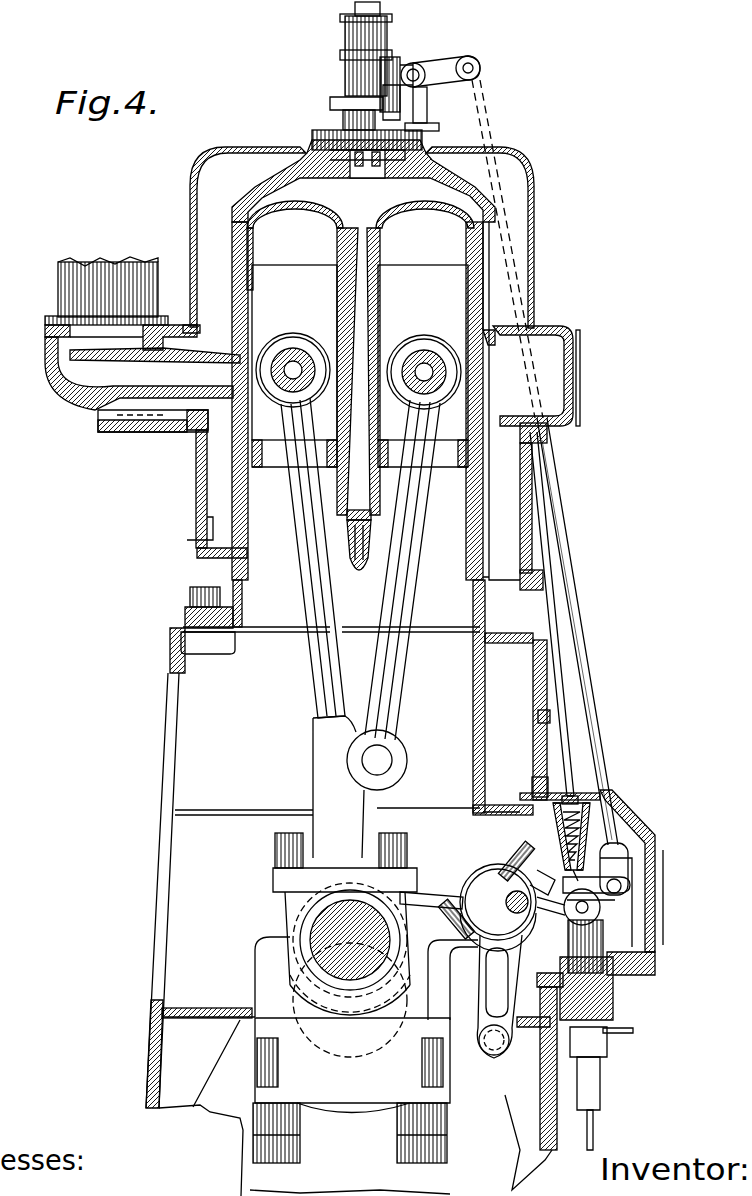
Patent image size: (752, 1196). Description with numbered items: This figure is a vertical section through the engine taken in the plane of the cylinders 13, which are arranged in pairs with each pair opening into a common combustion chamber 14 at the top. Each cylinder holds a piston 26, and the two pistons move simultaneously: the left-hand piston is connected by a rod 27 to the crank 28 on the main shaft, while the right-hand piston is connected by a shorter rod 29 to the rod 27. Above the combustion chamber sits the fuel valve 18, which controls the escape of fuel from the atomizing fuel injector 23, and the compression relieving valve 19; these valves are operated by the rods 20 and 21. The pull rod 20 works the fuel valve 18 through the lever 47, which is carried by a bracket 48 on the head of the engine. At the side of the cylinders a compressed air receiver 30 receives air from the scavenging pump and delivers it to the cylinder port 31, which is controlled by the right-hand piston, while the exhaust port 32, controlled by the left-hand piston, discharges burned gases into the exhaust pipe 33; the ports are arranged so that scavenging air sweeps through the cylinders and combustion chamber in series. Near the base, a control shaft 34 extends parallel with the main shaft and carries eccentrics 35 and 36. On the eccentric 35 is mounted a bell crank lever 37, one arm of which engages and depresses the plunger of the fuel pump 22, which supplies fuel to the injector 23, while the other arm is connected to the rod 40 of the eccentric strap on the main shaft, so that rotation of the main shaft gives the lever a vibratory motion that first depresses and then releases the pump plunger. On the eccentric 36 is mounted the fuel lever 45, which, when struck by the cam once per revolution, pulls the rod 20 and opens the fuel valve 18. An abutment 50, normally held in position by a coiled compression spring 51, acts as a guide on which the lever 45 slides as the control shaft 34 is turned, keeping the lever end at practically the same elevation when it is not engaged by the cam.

The cylinders 13 is at (241, 505).
The combustion chamber 14 is at (358, 236).
The fuel valve 18 is at (345, 46).
The compression relieving valve 19 is at (345, 90).
The pull rod 20 is at (588, 672).
The rod 21 is at (565, 704).
The fuel pump 22 is at (607, 1005).
The fuel injector 23 is at (355, 150).
The piston 26 is at (360, 366).
The rod 27 is at (316, 670).
The crank 28 is at (330, 932).
The shorter rod 29 is at (412, 670).
The compressed air receiver 30 is at (555, 386).
The cylinder port 31 is at (485, 372).
The exhaust port 32 is at (235, 356).
The exhaust pipe 33 is at (58, 284).
The control shaft 34 is at (513, 890).
The eccentric 35 is at (505, 913).
The eccentric 36 is at (532, 957).
The bell crank lever 37 is at (472, 878).
The rod 40 is at (467, 1032).
The fuel lever 45 is at (428, 905).
The lever 47 is at (440, 58).
The bracket 48 is at (430, 107).
The abutment 50 is at (590, 868).
The coiled compression spring 51 is at (588, 815).